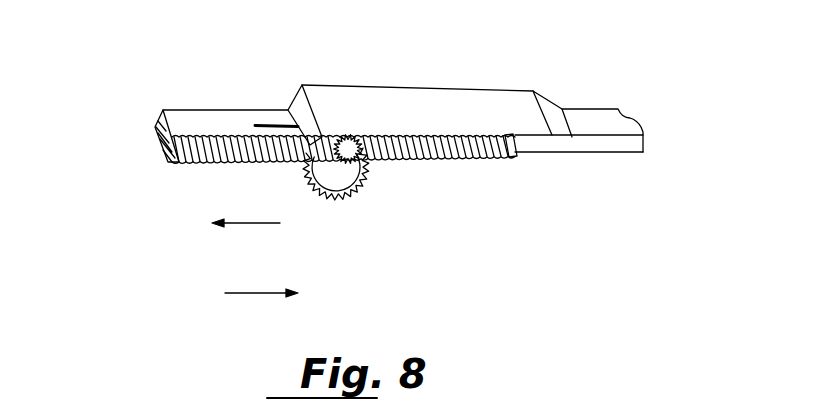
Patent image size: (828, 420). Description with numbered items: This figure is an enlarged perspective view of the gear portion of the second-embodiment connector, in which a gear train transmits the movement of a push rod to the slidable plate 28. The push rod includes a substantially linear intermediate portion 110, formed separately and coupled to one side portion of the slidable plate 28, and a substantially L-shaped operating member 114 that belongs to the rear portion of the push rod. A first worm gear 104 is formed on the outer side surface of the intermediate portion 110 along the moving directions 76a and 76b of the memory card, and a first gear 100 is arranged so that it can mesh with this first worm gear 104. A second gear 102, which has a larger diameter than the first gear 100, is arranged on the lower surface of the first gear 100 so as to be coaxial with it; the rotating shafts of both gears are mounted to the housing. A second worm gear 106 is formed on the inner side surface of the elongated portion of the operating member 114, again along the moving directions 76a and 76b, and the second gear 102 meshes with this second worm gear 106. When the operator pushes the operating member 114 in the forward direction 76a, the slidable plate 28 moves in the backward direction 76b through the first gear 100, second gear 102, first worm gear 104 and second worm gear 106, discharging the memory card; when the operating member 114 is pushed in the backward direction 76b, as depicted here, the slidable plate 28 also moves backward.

The slidable plate 28 is at (617, 127).
The forward direction 76a is at (267, 297).
The backward direction 76b is at (260, 223).
The first gear 100 is at (372, 162).
The second gear 102 is at (360, 189).
The first worm gear 104 is at (473, 157).
The second worm gear 106 is at (238, 162).
The intermediate portion 110 is at (505, 108).
The operating member 114 is at (212, 117).